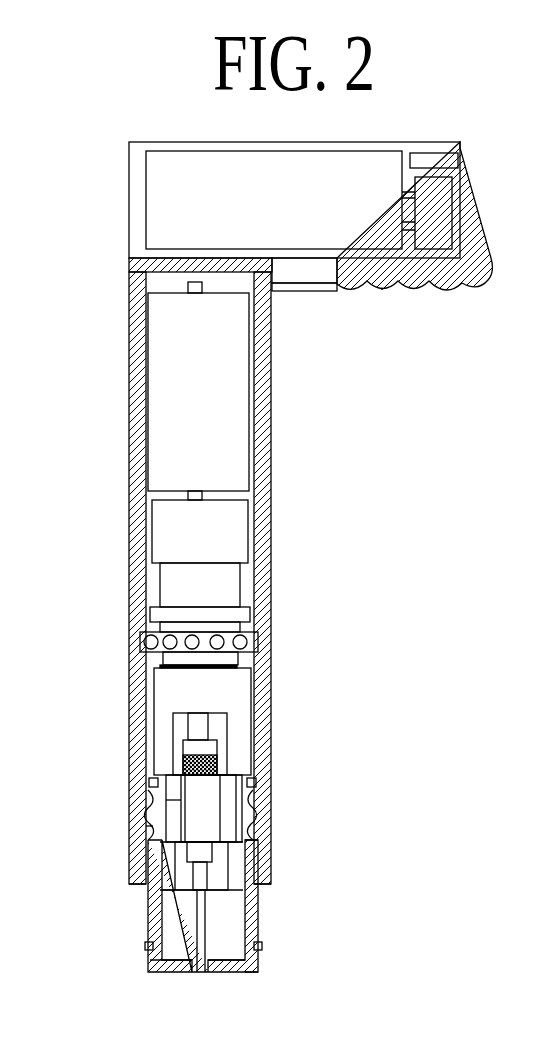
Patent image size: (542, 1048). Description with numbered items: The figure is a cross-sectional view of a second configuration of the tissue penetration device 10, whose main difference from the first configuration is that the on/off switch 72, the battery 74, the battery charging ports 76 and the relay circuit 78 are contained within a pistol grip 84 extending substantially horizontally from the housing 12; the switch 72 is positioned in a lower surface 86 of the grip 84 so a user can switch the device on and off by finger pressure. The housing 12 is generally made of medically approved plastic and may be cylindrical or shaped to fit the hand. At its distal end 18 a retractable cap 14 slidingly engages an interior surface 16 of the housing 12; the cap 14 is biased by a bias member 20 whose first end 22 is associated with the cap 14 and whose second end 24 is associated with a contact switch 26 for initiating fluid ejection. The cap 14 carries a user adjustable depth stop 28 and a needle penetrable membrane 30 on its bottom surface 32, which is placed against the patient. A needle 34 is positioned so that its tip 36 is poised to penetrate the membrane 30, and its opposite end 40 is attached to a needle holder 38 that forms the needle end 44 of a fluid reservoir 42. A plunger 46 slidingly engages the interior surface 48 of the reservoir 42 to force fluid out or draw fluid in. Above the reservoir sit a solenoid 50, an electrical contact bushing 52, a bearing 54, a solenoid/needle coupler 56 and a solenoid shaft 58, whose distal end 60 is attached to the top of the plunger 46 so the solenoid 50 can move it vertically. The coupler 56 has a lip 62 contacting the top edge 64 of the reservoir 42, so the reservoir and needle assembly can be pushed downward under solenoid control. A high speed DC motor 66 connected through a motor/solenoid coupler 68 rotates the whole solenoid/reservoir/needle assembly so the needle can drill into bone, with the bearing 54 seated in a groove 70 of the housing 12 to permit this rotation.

The tissue penetration device 10 is at (476, 121).
The housing 12 is at (272, 448).
The retractable cap 14 is at (251, 905).
The interior surface 16 is at (240, 862).
The distal end 18 is at (266, 887).
The bias member 20 is at (147, 800).
The first end 22 is at (141, 833).
The second end 24 is at (243, 790).
The contact switch 26 is at (184, 800).
The user adjustable depth stop 28 is at (146, 946).
The needle penetrable membrane 30 is at (201, 974).
The bottom surface 32 is at (162, 975).
The needle 34 is at (248, 975).
The tip 36 is at (193, 975).
The needle holder 38 is at (259, 867).
The opposite end 40 is at (176, 897).
The fluid reservoir 42 is at (201, 815).
The needle end 44 is at (208, 836).
The plunger 46 is at (205, 760).
The interior surface 48 is at (150, 784).
The solenoid 50 is at (222, 589).
The electrical contact bushing 52 is at (247, 617).
The bearing 54 is at (250, 642).
The solenoid/needle coupler 56 is at (163, 682).
The solenoid shaft 58 is at (197, 730).
The distal end 60 is at (228, 714).
The lip 62 is at (238, 768).
The top edge 64 is at (158, 768).
The high speed DC motor 66 is at (214, 397).
The motor/solenoid coupler 68 is at (227, 535).
The groove 70 is at (126, 634).
The on/off switch 72 is at (319, 268).
The battery 74 is at (292, 208).
The battery charging ports 76 is at (442, 161).
The relay circuit 78 is at (434, 216).
The pistol grip 84 is at (436, 309).
The lower surface 86 is at (382, 290).